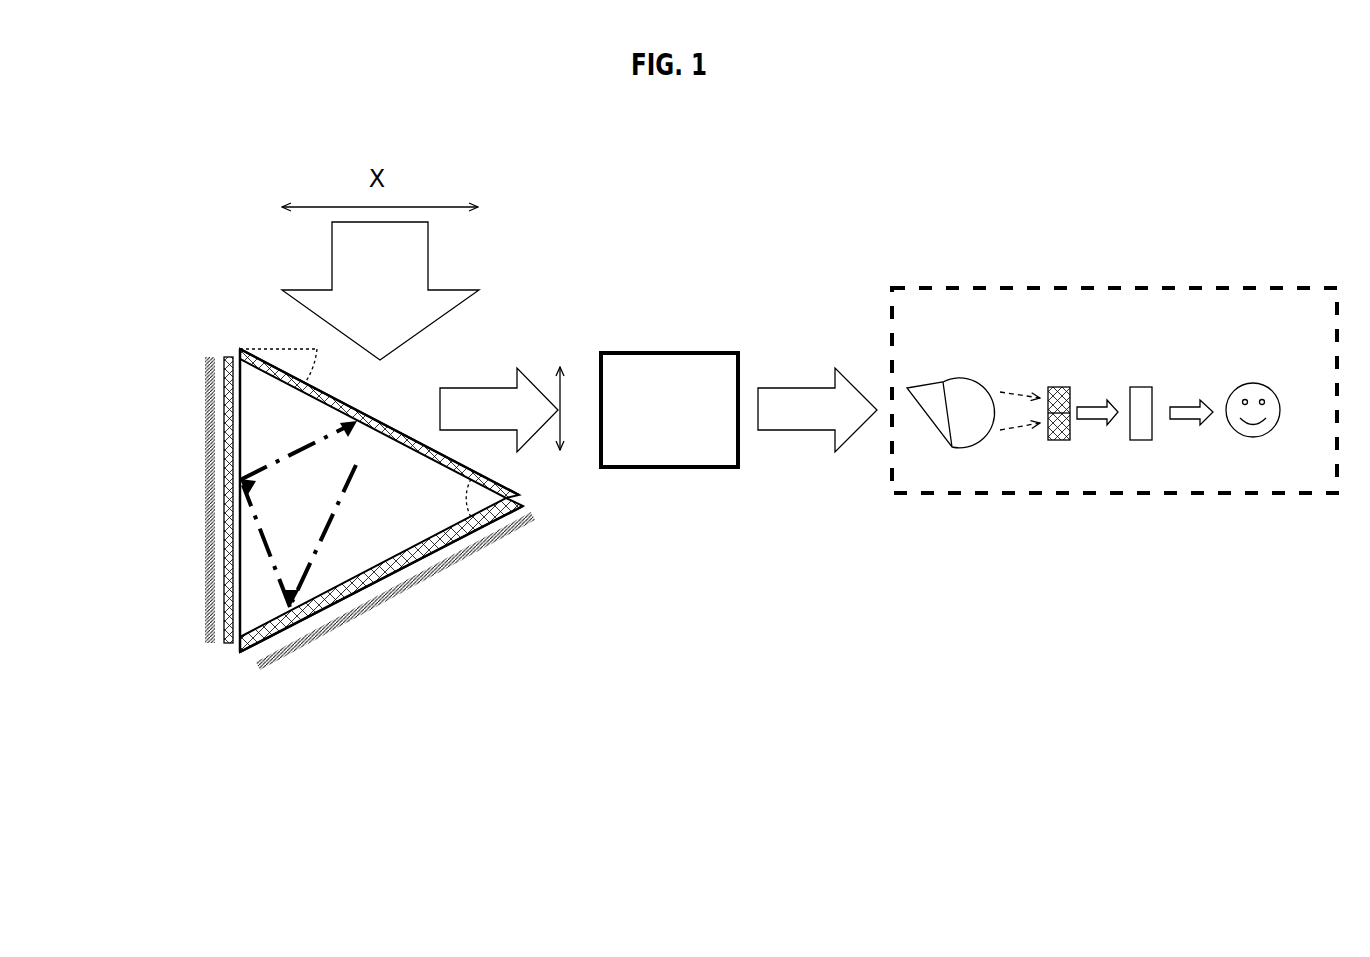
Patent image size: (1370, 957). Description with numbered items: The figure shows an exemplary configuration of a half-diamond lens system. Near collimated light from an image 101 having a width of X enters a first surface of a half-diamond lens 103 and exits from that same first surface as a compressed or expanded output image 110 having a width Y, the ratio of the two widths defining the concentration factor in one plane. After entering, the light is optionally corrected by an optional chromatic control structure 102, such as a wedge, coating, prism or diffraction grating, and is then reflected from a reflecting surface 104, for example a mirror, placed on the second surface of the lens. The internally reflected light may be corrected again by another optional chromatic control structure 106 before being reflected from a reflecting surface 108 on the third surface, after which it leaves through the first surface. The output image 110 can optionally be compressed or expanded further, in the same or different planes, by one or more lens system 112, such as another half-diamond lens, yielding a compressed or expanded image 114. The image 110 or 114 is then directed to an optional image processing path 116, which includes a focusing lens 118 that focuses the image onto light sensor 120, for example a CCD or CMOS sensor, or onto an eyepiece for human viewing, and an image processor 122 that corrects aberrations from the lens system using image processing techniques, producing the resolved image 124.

The image 101 is at (431, 250).
The chromatic control structure 102 is at (509, 481).
The half-diamond lens 103 is at (358, 462).
The reflecting surface 104 is at (537, 521).
The chromatic control structure 106 is at (229, 355).
The reflecting surface 108 is at (189, 475).
The output image 110 is at (474, 386).
The lens system 112 is at (669, 410).
The compressed or expanded image 114 is at (802, 387).
The image processing path 116 is at (911, 283).
The focusing lens 118 is at (963, 375).
The light sensor 120 is at (1057, 375).
The image processor 122 is at (1138, 375).
The resolved image 124 is at (1264, 395).